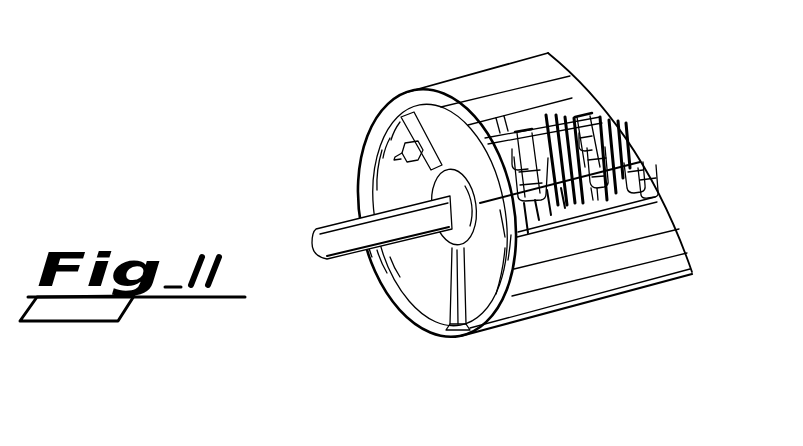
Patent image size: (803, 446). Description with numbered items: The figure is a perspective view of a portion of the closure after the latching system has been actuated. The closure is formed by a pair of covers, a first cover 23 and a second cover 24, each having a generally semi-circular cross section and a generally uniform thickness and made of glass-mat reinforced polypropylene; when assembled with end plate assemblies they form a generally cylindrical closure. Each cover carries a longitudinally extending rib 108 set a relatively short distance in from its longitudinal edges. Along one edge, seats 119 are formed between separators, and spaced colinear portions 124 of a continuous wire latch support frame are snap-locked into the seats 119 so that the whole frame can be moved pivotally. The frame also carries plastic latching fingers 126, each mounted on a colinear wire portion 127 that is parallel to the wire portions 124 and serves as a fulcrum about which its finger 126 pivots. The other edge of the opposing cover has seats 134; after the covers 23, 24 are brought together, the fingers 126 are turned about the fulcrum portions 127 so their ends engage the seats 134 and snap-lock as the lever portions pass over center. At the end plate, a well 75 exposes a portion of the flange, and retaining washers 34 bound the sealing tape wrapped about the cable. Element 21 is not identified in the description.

The first cover 23 is at (463, 75).
The rib 108 is at (563, 113).
The latching finger 126 is at (589, 127).
The wire portion 127 is at (598, 135).
The seat 134 is at (608, 160).
The seat 119 is at (633, 177).
The colinear portion of wire latch support 124 is at (628, 189).
The second cover 24 is at (645, 289).
The retaining washer 34 is at (456, 234).
The well 75 is at (453, 307).
The shaft 21 is at (341, 262).